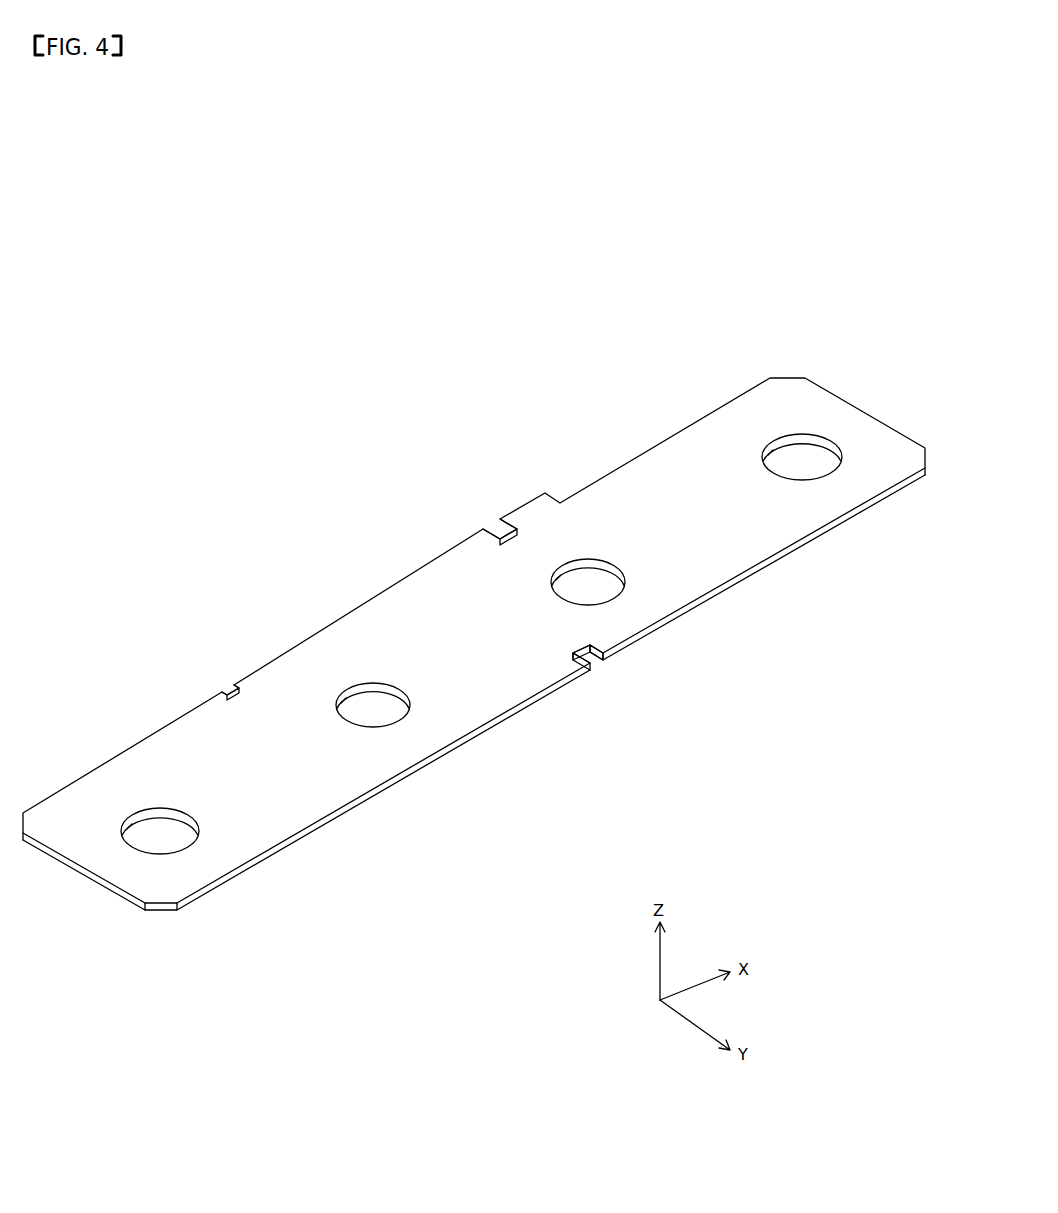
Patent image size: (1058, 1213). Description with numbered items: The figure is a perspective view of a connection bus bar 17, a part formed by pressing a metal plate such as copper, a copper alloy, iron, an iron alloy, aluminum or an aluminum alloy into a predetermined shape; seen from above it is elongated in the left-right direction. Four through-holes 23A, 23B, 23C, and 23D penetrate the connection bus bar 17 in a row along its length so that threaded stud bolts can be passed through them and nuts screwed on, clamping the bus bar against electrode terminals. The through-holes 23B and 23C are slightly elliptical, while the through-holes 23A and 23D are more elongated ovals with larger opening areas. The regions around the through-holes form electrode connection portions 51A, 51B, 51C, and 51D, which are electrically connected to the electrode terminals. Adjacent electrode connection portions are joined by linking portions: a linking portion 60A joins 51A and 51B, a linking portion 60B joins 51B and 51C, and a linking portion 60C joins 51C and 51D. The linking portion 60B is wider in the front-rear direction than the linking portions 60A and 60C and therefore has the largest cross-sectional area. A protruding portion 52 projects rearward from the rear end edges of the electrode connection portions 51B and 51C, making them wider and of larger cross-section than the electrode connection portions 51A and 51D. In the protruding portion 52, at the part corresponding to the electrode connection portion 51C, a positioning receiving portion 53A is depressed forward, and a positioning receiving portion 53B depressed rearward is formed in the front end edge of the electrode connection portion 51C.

The connection bus bar 17 is at (680, 475).
The through-hole 23A is at (188, 822).
The through-hole 23B is at (398, 697).
The through-hole 23C is at (608, 566).
The through-hole 23D is at (828, 442).
The electrode connection portion 51A is at (168, 799).
The electrode connection portion 51B is at (368, 672).
The electrode connection portion 51C is at (593, 545).
The electrode connection portion 51D is at (793, 424).
The protruding portion 52 is at (223, 689).
The positioning receiving portion 53A is at (498, 526).
The positioning receiving portion 53B is at (593, 667).
The linking portion 60A is at (252, 768).
The linking portion 60B is at (467, 647).
The linking portion 60C is at (662, 532).